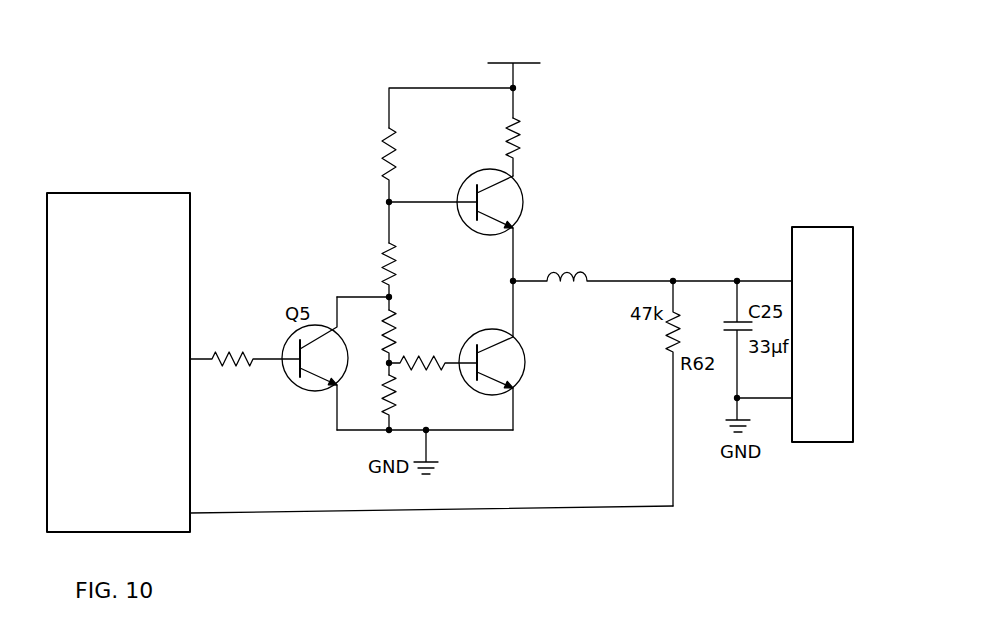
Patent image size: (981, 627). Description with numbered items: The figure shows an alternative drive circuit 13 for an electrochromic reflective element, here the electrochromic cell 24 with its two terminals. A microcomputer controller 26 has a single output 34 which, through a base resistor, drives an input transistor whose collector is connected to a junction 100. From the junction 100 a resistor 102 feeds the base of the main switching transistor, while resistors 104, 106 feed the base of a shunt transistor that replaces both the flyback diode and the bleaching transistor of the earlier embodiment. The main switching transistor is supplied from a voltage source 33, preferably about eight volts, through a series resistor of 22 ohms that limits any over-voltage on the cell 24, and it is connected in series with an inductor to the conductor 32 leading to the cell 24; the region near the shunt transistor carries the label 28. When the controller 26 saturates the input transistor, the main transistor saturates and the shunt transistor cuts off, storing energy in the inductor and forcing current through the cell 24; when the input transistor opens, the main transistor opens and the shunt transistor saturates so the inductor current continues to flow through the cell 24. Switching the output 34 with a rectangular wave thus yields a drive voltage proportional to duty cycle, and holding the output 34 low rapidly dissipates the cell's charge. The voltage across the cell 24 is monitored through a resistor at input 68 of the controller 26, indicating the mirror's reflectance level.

The microcomputer controller 26 is at (80, 190).
The output 34 is at (200, 352).
The input 68 is at (212, 518).
The voltage source 33 is at (534, 60).
The drive circuit 13 is at (516, 199).
The resistor R51 value 22 is at (499, 147).
The junction 100 is at (386, 295).
The resistor 102 is at (400, 246).
The resistor 104 is at (400, 312).
The resistor 106 is at (415, 352).
The driver circuit portion 28 is at (578, 349).
The output line to EC cell 32 is at (641, 280).
The electrochromic cell 24 is at (818, 223).